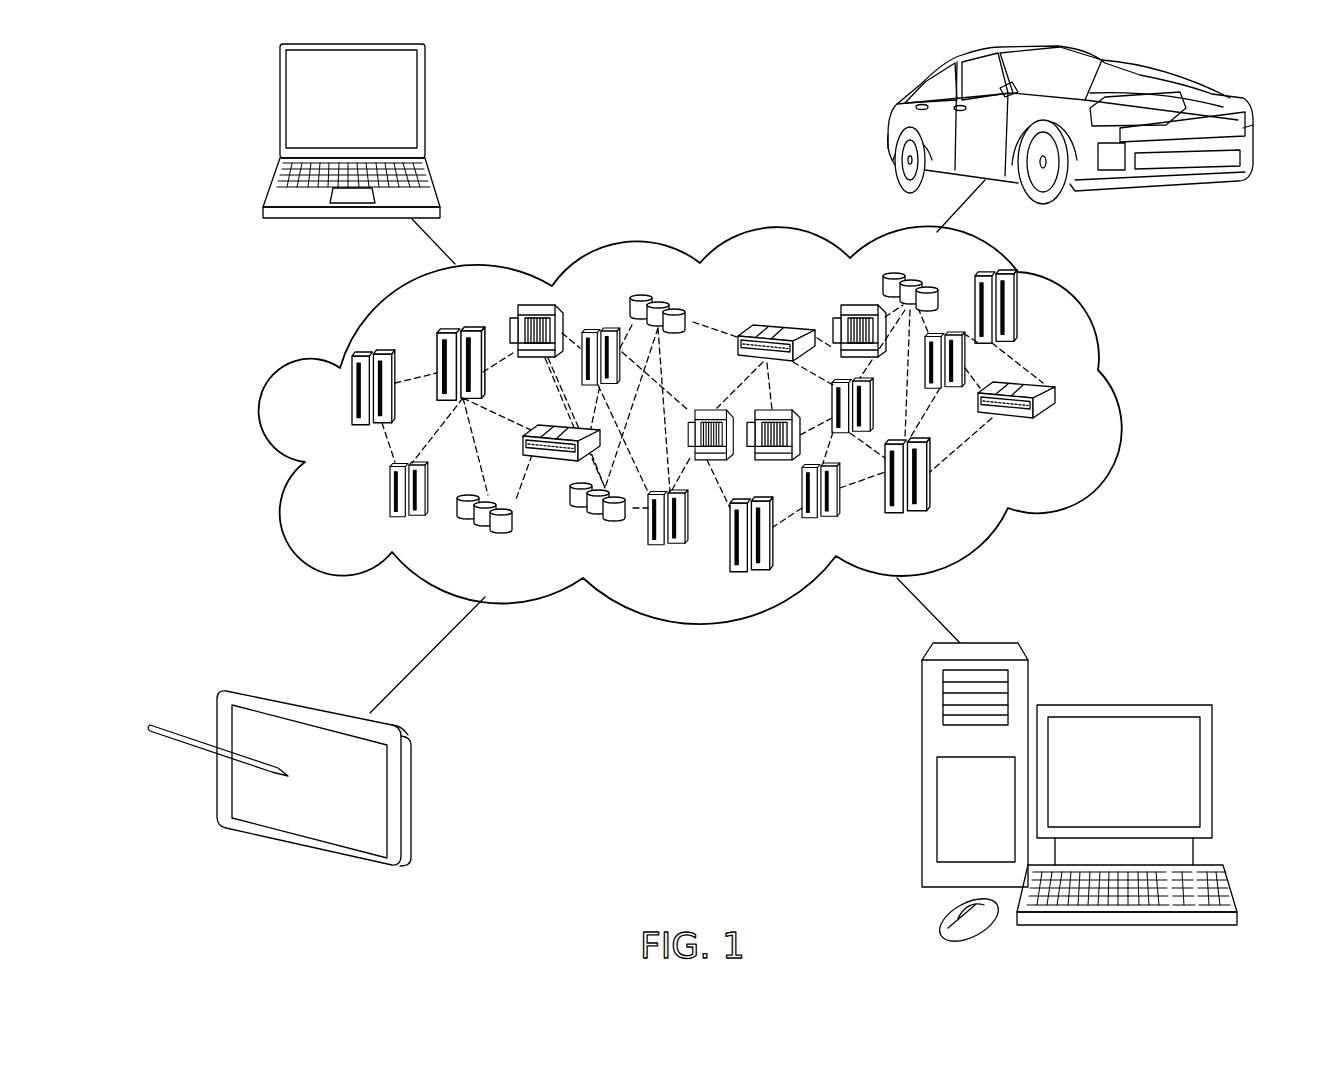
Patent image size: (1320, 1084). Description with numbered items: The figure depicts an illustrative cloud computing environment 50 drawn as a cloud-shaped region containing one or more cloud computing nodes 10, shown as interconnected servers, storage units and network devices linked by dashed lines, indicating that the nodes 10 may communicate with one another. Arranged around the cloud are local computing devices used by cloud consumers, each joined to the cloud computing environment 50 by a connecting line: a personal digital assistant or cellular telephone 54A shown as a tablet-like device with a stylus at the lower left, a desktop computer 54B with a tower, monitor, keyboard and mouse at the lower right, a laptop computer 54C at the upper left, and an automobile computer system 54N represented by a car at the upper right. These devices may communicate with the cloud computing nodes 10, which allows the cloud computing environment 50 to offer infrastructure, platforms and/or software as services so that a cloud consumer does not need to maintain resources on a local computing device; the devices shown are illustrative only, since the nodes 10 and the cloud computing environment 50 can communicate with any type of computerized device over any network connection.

The cloud computing node 10 is at (1058, 430).
The cloud computing environment 50 is at (1123, 398).
The personal digital assistant or cellular telephone 54A is at (412, 803).
The desktop computer 54B is at (1118, 705).
The laptop computer 54C is at (426, 109).
The automobile computer system 54N is at (889, 122).